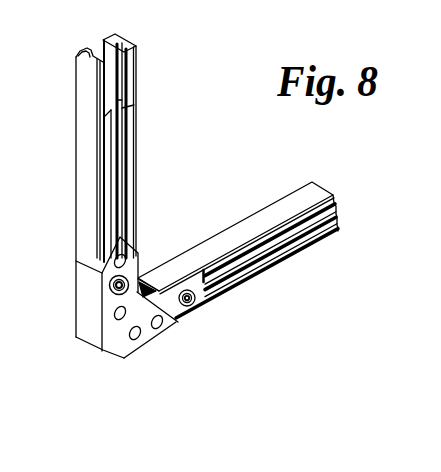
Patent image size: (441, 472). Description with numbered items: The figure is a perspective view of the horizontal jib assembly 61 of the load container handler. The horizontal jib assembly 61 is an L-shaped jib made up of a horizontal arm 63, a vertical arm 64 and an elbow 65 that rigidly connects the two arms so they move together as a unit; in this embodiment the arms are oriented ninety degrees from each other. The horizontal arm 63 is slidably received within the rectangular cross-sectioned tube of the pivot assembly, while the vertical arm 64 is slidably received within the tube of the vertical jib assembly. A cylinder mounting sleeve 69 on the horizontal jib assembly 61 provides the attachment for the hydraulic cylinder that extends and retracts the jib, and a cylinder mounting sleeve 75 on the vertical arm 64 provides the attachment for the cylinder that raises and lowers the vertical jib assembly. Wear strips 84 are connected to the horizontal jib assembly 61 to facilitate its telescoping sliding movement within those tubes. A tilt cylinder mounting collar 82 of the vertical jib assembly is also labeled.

The horizontal jib assembly 61 is at (204, 159).
The horizontal arm 63 is at (306, 250).
The vertical arm 64 is at (137, 109).
The elbow 65 is at (117, 345).
The cylinder mounting sleeve 69 is at (194, 304).
The cylinder mounting sleeve 75 is at (130, 278).
The tilt cylinder mounting collar 82 is at (54, 12).
The wear strips 84 is at (113, 178).